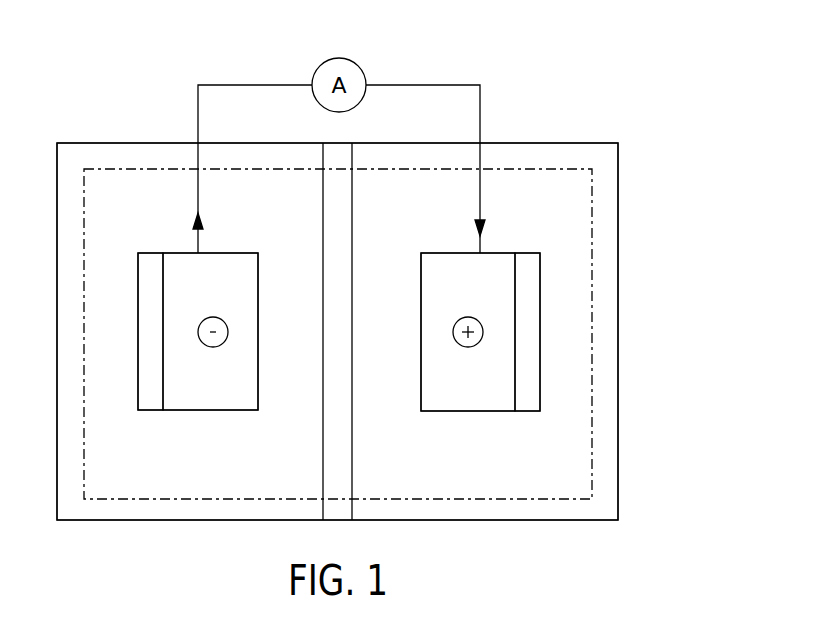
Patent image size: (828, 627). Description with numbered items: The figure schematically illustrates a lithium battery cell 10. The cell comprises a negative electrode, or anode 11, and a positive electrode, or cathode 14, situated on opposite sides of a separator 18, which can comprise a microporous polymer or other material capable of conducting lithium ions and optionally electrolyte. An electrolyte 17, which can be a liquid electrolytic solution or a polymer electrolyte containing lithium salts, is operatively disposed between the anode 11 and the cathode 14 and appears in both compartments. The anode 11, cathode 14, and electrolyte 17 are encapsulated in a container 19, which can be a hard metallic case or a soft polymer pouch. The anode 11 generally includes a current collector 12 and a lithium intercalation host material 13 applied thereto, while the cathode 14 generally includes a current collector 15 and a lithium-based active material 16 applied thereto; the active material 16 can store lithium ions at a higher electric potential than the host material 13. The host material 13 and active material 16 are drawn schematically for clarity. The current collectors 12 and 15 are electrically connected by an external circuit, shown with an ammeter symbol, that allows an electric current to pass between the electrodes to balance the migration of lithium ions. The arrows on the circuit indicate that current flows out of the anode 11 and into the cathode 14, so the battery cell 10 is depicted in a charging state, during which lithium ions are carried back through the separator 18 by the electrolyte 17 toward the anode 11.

The lithium battery cell 10 is at (635, 110).
The negative electrode 11 is at (158, 425).
The current collector 12 is at (220, 400).
The lithium intercalation host material 13 is at (152, 333).
The positive electrode 14 is at (525, 425).
The current collector 15 is at (460, 400).
The lithium-based active material 16 is at (526, 340).
The electrolyte 17 is at (283, 449).
The separator 18 is at (348, 222).
The container 19 is at (620, 347).